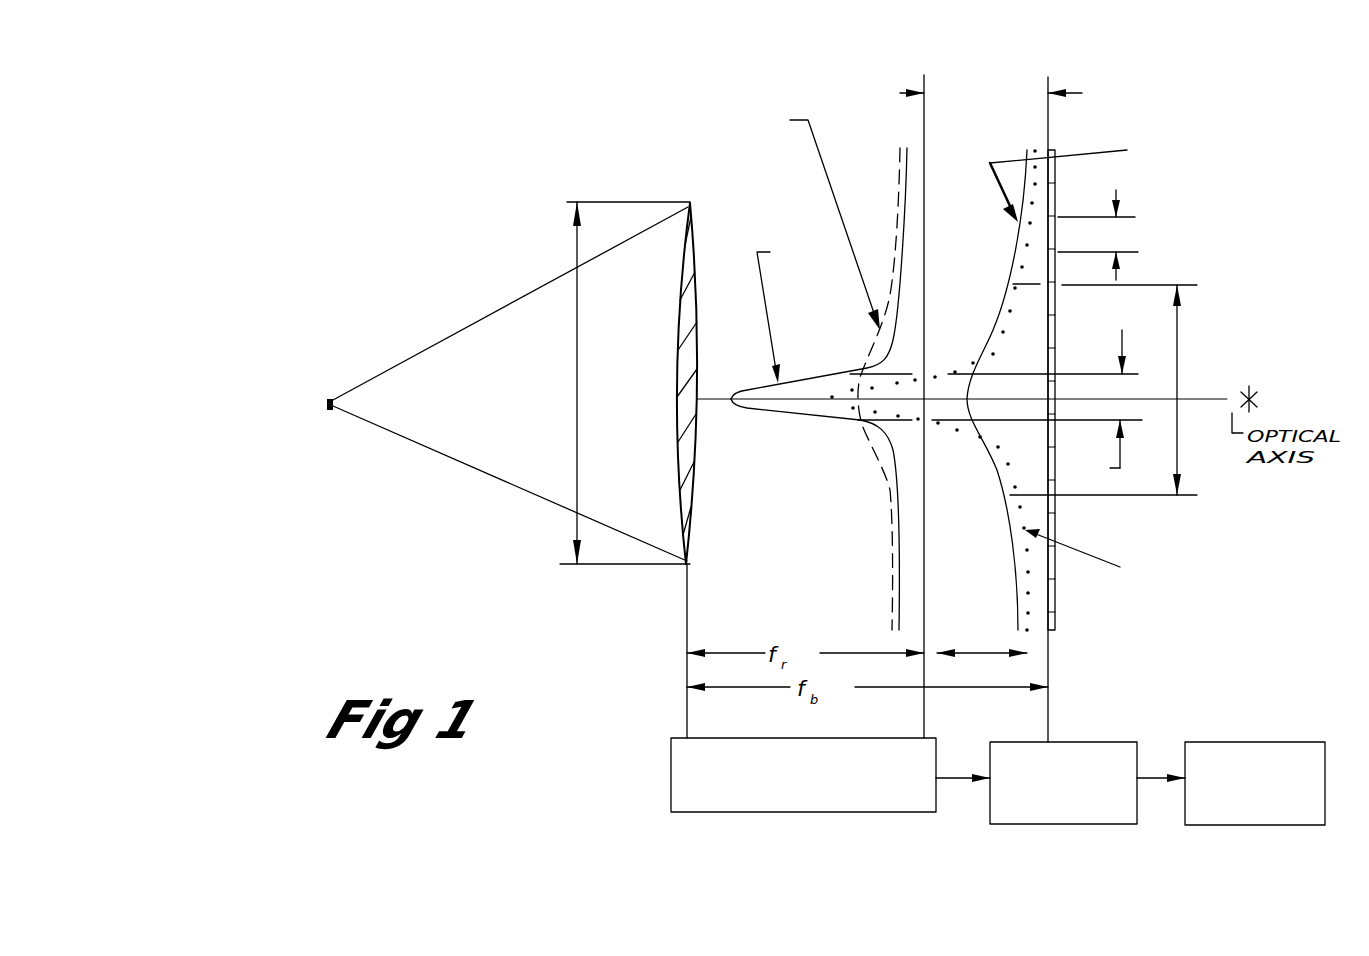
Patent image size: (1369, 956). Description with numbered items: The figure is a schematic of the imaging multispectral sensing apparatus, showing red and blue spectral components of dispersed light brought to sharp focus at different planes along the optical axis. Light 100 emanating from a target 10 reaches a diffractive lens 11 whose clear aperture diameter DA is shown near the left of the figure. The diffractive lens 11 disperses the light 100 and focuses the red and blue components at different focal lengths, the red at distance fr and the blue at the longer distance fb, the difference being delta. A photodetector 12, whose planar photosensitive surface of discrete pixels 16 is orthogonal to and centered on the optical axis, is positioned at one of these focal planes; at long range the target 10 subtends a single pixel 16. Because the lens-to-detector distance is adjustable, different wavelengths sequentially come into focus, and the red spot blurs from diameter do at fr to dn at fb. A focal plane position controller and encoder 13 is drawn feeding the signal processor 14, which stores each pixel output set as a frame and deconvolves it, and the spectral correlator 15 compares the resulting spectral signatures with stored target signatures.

The target 10 is at (327, 411).
The light 100 is at (458, 426).
The diffractive lens 11 is at (695, 227).
The photodetector 12 is at (925, 142).
The focal plane position controller and encoder 13 is at (671, 778).
The signal processor 14 is at (988, 823).
The spectral correlator 15 is at (1223, 742).
The pixel 16 is at (924, 392).